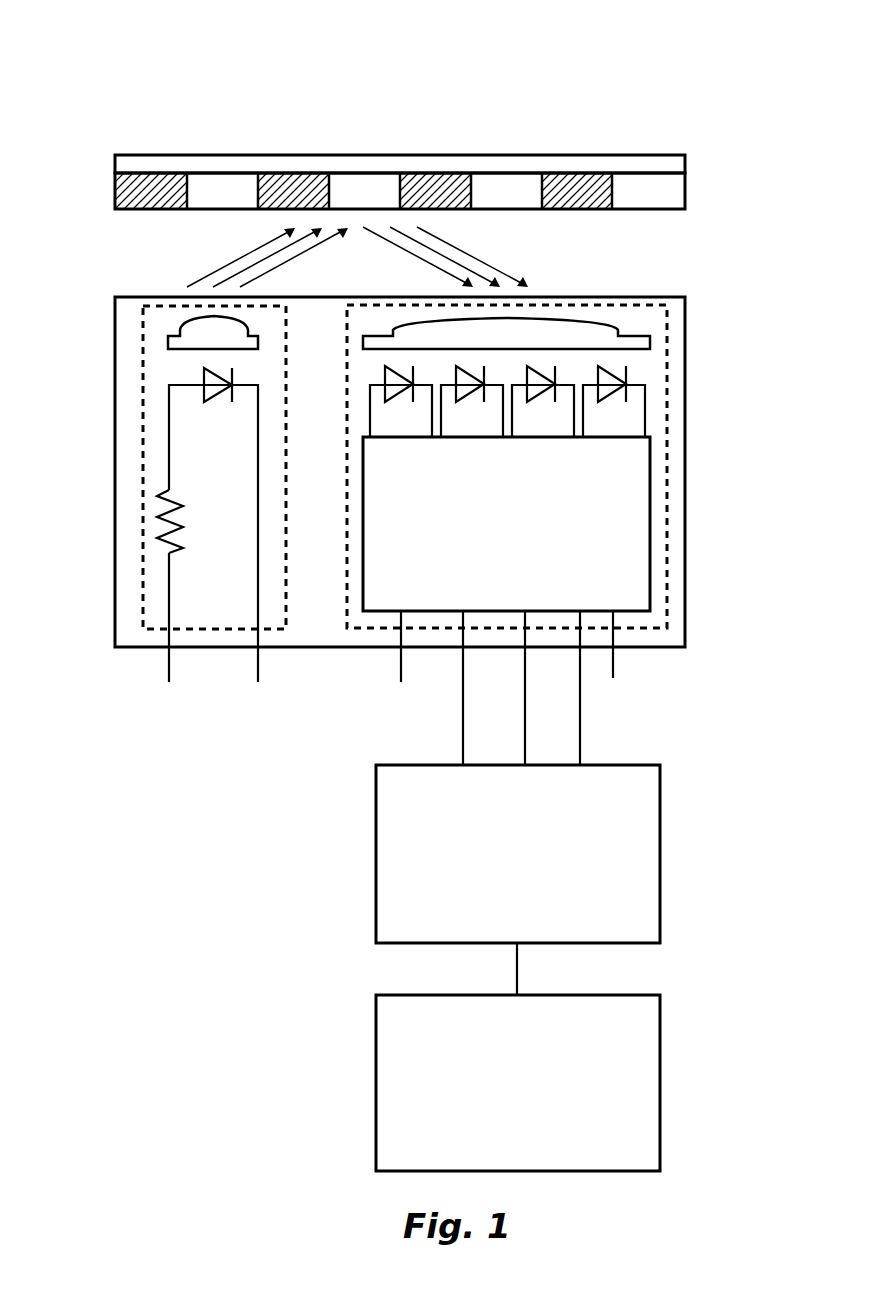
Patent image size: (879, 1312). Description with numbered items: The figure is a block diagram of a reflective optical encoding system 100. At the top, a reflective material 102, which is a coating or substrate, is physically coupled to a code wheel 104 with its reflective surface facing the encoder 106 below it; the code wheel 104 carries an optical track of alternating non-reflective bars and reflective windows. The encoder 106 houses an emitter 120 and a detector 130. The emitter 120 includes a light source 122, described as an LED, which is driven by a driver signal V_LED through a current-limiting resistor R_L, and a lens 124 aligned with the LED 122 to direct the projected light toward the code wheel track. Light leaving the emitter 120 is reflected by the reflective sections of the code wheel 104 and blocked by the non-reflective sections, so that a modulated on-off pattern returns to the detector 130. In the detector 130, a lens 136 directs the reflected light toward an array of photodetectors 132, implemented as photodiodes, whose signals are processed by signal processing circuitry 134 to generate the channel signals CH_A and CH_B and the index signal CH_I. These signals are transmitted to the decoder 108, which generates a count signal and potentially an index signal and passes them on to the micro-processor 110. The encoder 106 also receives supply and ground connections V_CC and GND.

The reflective optical encoding system 100 is at (146, 44).
The reflective material 102 is at (677, 162).
The code wheel 104 is at (687, 192).
The encoder 106 is at (685, 515).
The decoder 108 is at (661, 855).
The micro-processor 110 is at (661, 1085).
The emitter 120 is at (143, 385).
The light source 122 is at (223, 392).
The lens 124 is at (195, 330).
The detector 130 is at (667, 382).
The photodetectors 132 is at (403, 392).
The signal processing circuitry 134 is at (647, 570).
The lens 136 is at (573, 330).